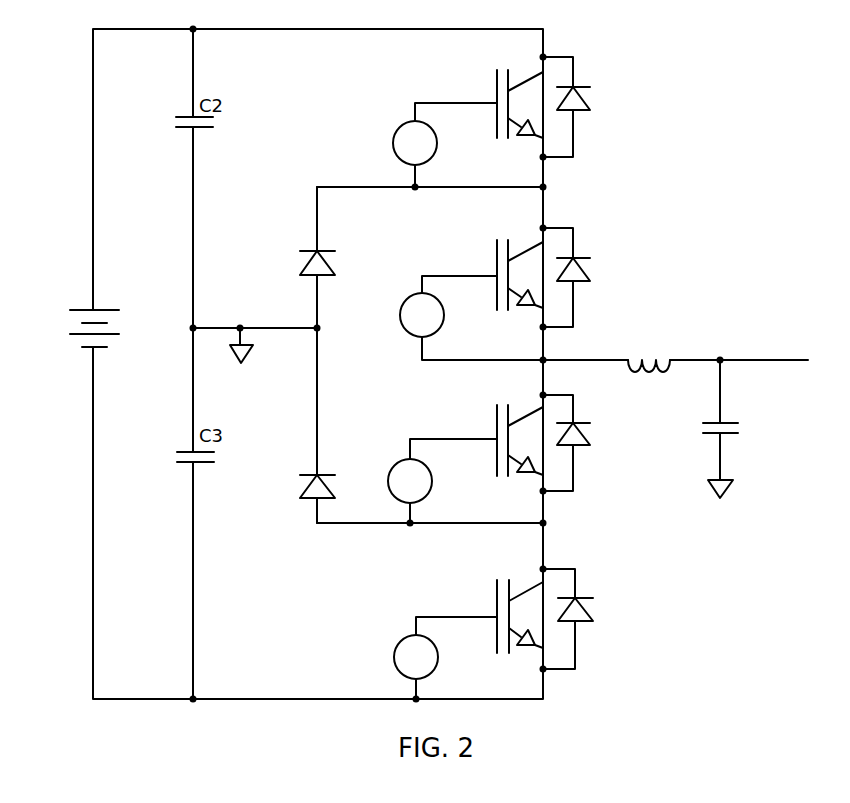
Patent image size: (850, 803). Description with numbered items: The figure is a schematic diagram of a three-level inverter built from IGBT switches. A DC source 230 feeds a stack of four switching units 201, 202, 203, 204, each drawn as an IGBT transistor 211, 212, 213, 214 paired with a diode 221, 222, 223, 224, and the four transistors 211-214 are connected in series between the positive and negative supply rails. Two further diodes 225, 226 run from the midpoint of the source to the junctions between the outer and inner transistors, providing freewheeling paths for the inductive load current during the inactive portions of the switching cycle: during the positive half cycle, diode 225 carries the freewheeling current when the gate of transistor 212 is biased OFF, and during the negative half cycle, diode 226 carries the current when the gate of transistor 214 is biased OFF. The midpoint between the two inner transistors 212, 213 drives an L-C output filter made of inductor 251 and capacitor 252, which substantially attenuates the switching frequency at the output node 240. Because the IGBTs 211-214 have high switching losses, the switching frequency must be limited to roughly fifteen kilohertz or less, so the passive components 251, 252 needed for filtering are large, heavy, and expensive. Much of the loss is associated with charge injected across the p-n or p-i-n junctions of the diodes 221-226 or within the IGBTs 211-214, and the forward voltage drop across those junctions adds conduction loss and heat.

The switching unit 201 is at (520, 111).
The second switching unit 202 is at (520, 280).
The third switching unit 203 is at (519, 447).
The fourth switching unit 204 is at (519, 620).
The IGBT transistor 211 is at (492, 95).
The transistor 212 is at (492, 262).
The IGBT transistor 213 is at (493, 437).
The transistor 214 is at (493, 605).
The diode 221 is at (625, 167).
The diode 222 is at (625, 333).
The diode 223 is at (623, 510).
The diode 224 is at (622, 675).
The diode 225 is at (302, 259).
The diode 226 is at (302, 482).
The DC power supply 230 is at (72, 321).
The output node 240 is at (720, 355).
The inductor 251 is at (650, 357).
The capacitor 252 is at (725, 415).